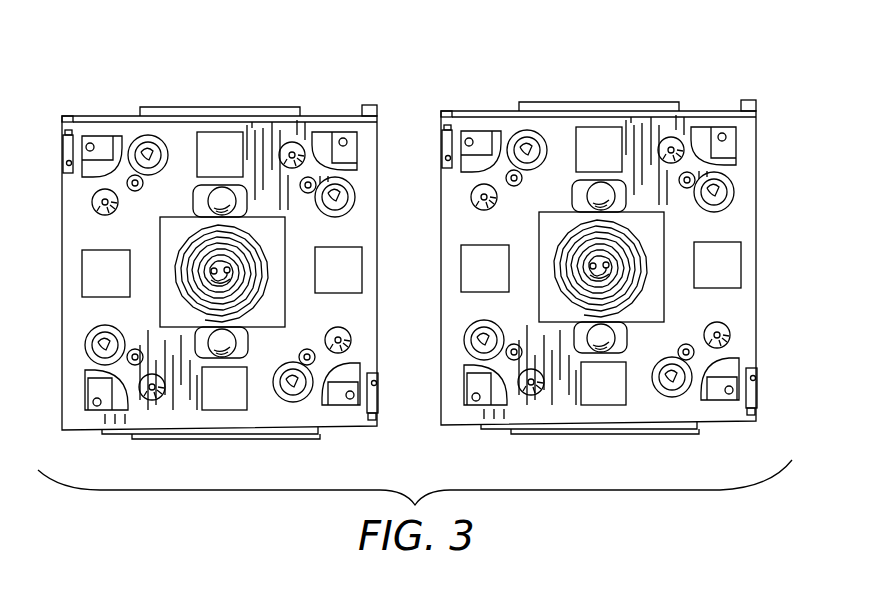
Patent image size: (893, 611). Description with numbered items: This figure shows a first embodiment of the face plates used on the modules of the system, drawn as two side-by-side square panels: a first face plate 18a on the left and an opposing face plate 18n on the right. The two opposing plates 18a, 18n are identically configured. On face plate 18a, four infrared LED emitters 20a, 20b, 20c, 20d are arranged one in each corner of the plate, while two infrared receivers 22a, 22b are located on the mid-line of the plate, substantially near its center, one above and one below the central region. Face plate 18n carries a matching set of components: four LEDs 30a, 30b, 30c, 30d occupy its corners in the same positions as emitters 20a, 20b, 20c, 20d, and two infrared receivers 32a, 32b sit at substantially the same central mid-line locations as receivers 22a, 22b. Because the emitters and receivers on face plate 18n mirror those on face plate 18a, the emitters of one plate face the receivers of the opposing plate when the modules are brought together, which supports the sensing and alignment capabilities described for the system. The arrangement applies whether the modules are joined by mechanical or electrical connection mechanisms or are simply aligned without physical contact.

The face plate 18a is at (191, 77).
The face plate 18n is at (595, 258).
The IR LED emitter 20a is at (91, 144).
The IR LED emitter 20b is at (343, 141).
The IR LED emitter 20c is at (97, 405).
The IR LED emitter 20d is at (350, 399).
The IR receiver 22a is at (230, 192).
The IR receiver 22b is at (234, 346).
The LED 30a is at (484, 121).
The LED 30b is at (713, 116).
The LED 30c is at (470, 416).
The LED 30d is at (723, 412).
The IR receiver 32a is at (614, 140).
The IR receiver 32b is at (597, 397).